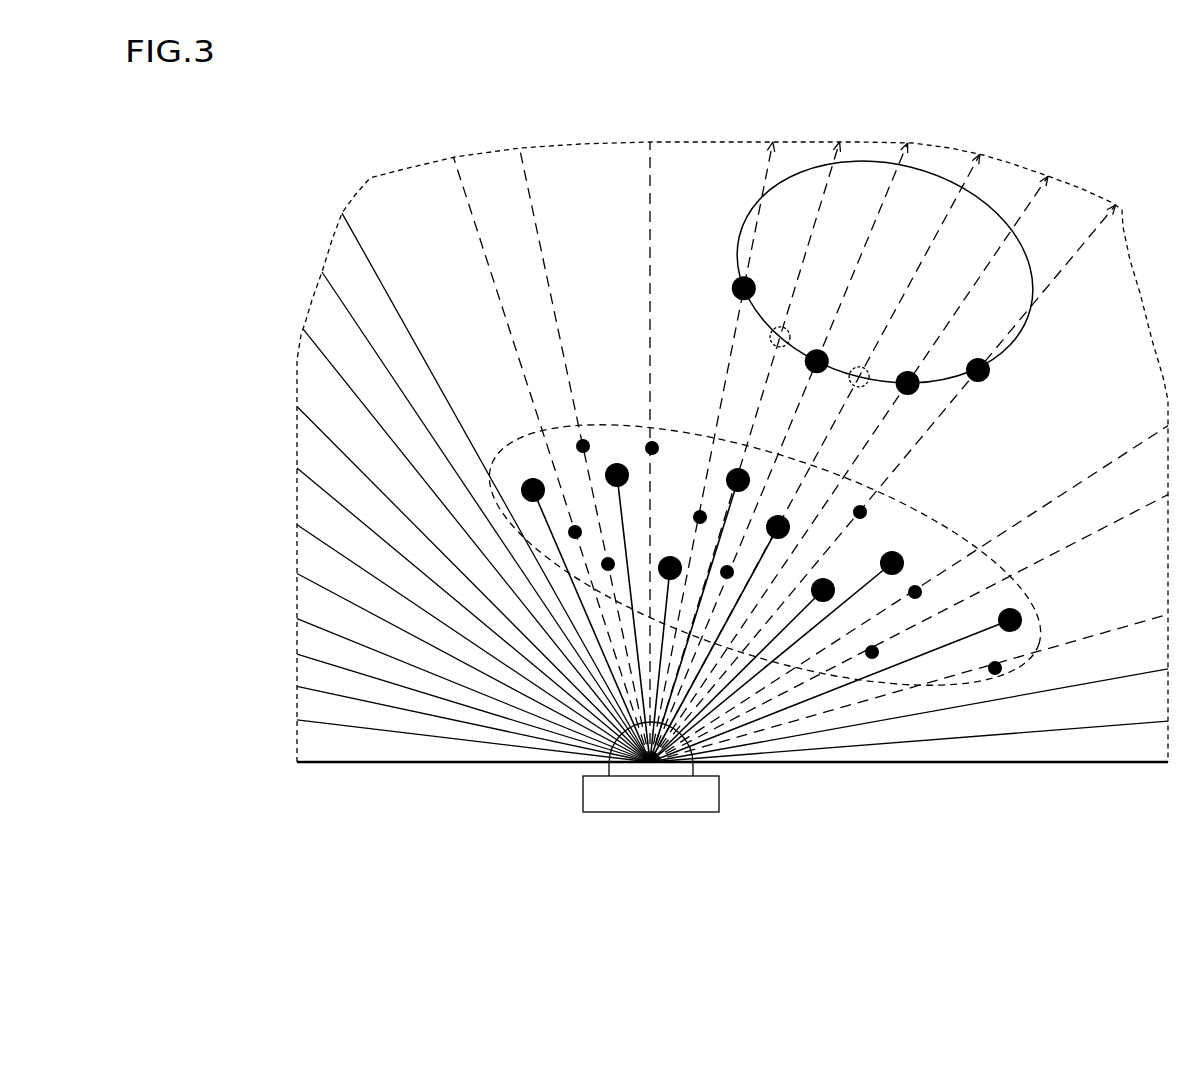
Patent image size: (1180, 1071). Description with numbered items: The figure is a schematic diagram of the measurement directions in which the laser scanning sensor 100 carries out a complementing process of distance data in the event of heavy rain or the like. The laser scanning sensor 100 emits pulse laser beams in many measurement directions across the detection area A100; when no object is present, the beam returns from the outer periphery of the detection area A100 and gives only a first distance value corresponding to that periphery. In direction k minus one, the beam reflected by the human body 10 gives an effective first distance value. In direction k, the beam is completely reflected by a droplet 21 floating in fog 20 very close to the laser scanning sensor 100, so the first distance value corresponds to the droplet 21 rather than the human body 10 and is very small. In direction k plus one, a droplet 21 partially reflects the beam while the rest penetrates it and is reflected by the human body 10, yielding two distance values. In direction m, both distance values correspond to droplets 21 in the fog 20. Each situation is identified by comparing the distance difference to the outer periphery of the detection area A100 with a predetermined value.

The detection area A100 is at (374, 186).
The laser scanning sensor 100 is at (583, 796).
The human body 10 is at (1020, 343).
The fog 20 is at (962, 533).
The droplet 21 is at (768, 470).